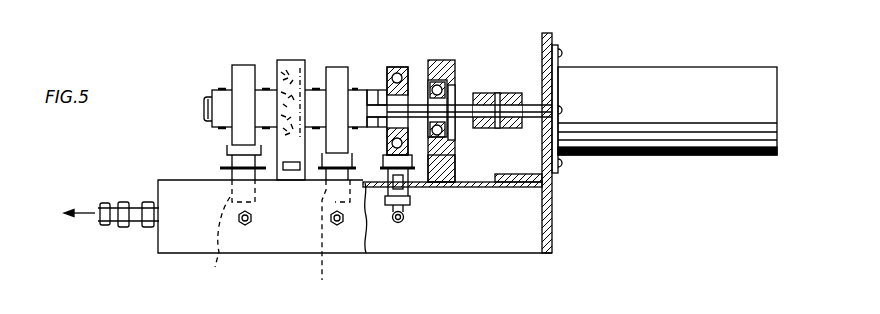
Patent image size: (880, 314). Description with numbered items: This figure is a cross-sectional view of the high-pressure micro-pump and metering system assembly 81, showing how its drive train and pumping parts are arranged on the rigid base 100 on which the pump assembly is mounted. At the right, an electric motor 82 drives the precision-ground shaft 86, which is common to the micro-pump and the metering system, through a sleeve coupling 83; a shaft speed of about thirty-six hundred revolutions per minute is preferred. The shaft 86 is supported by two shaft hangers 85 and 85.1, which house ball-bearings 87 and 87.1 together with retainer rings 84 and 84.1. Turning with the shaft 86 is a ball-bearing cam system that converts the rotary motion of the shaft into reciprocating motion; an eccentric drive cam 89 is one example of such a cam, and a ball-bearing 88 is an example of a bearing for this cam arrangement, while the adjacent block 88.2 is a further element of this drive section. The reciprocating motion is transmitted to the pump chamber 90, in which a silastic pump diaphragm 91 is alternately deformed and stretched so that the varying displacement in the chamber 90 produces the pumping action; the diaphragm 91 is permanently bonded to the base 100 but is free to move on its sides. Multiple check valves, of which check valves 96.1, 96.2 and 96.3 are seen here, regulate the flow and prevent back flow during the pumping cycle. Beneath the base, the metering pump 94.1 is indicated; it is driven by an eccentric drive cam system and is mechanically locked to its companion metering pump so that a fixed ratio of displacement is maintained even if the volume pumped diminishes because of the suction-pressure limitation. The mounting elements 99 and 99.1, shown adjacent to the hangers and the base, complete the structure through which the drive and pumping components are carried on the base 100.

The high-pressure micro-pump and metering system assembly 81 is at (298, 226).
The electric motor 82 is at (697, 112).
The sleeve coupling 83 is at (493, 94).
The retainer ring 84 is at (457, 78).
The retainer ring 84.1 is at (276, 68).
The shaft hanger 85 is at (447, 60).
The shaft hanger 85.1 is at (291, 60).
The precision-ground shaft 86 is at (207, 108).
The ball-bearing 87 is at (432, 62).
The ball-bearing 87.1 is at (278, 74).
The ball-bearing 88 is at (396, 67).
The support block 88.2 is at (232, 70).
The eccentric drive cam 89 is at (373, 90).
The pump chamber 90 is at (387, 205).
The silastic pump diaphragm 91 is at (410, 199).
The metering pump 94.1 is at (212, 229).
The check valve 96.1 is at (340, 226).
The check valve 96.2 is at (247, 225).
The check valve 96.3 is at (135, 227).
The mounting block 99 is at (455, 170).
The mounting bore 99.1 is at (330, 242).
The rigid base 100 is at (558, 202).